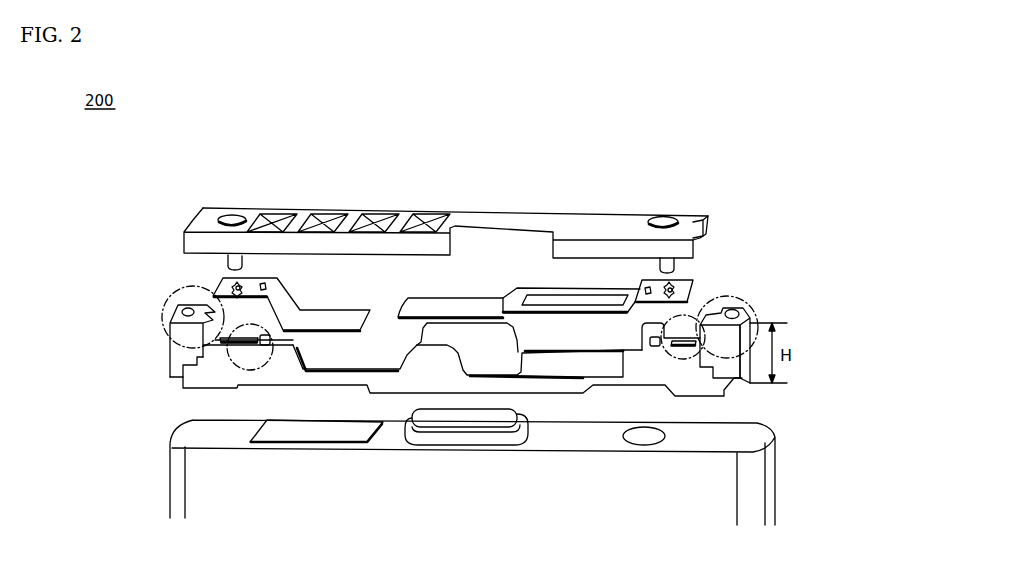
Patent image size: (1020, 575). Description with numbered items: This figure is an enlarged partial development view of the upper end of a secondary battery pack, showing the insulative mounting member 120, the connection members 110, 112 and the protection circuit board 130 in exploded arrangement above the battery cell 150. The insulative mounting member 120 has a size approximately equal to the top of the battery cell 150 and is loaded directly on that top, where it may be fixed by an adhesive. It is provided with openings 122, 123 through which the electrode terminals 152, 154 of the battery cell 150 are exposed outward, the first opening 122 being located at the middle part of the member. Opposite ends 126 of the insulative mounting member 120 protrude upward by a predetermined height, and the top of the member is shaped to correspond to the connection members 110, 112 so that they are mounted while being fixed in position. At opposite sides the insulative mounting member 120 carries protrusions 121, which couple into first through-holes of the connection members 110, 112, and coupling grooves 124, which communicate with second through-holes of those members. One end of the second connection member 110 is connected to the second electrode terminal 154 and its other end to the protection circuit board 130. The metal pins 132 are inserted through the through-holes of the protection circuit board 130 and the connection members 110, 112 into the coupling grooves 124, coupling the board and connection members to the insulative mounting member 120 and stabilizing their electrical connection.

The second connection member 110 is at (214, 279).
The connection member 112 is at (686, 280).
The insulative mounting member 120 is at (155, 351).
The protrusion 121 is at (258, 350).
The first opening 122 is at (500, 370).
The opening 123 is at (355, 369).
The coupling groove 124 is at (183, 373).
The opposite ends of the insulative mounting member 126 is at (161, 312).
The protection circuit board 130 is at (180, 230).
The metal pin 132 is at (237, 218).
The battery cell 150 is at (167, 462).
The first electrode terminal 152 is at (462, 428).
The second electrode terminal 154 is at (318, 428).